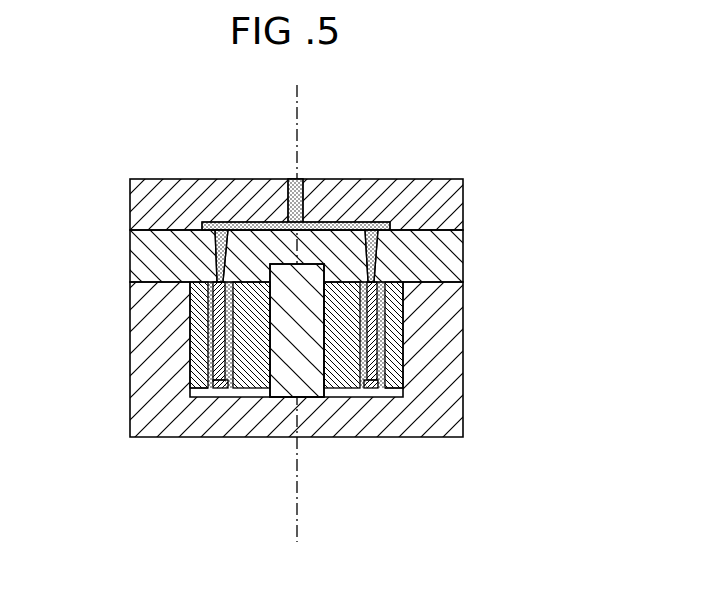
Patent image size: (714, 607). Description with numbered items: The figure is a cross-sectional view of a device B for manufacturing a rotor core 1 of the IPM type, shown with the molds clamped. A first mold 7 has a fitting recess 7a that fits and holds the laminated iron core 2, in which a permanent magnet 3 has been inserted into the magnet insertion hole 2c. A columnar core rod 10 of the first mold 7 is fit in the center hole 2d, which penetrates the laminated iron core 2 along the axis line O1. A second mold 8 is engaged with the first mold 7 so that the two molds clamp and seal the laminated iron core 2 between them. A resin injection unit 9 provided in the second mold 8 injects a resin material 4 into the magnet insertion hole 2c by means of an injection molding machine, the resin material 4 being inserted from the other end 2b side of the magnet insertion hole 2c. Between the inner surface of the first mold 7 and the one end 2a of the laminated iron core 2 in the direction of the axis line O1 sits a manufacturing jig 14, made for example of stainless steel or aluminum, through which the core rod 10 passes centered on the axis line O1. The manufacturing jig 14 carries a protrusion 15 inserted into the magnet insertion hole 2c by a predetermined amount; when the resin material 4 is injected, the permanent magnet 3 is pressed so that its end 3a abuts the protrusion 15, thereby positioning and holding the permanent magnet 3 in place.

The rotor core 1 is at (415, 344).
The laminated iron core 2 is at (395, 330).
The one end of the laminated iron core 2a is at (380, 388).
The other end of the magnet insertion hole 2b is at (341, 283).
The magnet insertion hole 2c is at (212, 280).
The center hole 2d is at (297, 330).
The permanent magnet 3 is at (198, 315).
The end of the permanent magnet 3a is at (207, 380).
The resin material 4 is at (267, 179).
The first mold 7 is at (480, 386).
The fitting recess 7a is at (254, 370).
The second mold 8 is at (470, 195).
The resin injection unit 9 is at (341, 209).
The core rod 10 is at (317, 368).
The manufacturing jig 14 is at (218, 385).
The protrusion 15 is at (218, 388).
The device for manufacturing the rotor core B is at (497, 163).
The axis line O1 is at (296, 300).